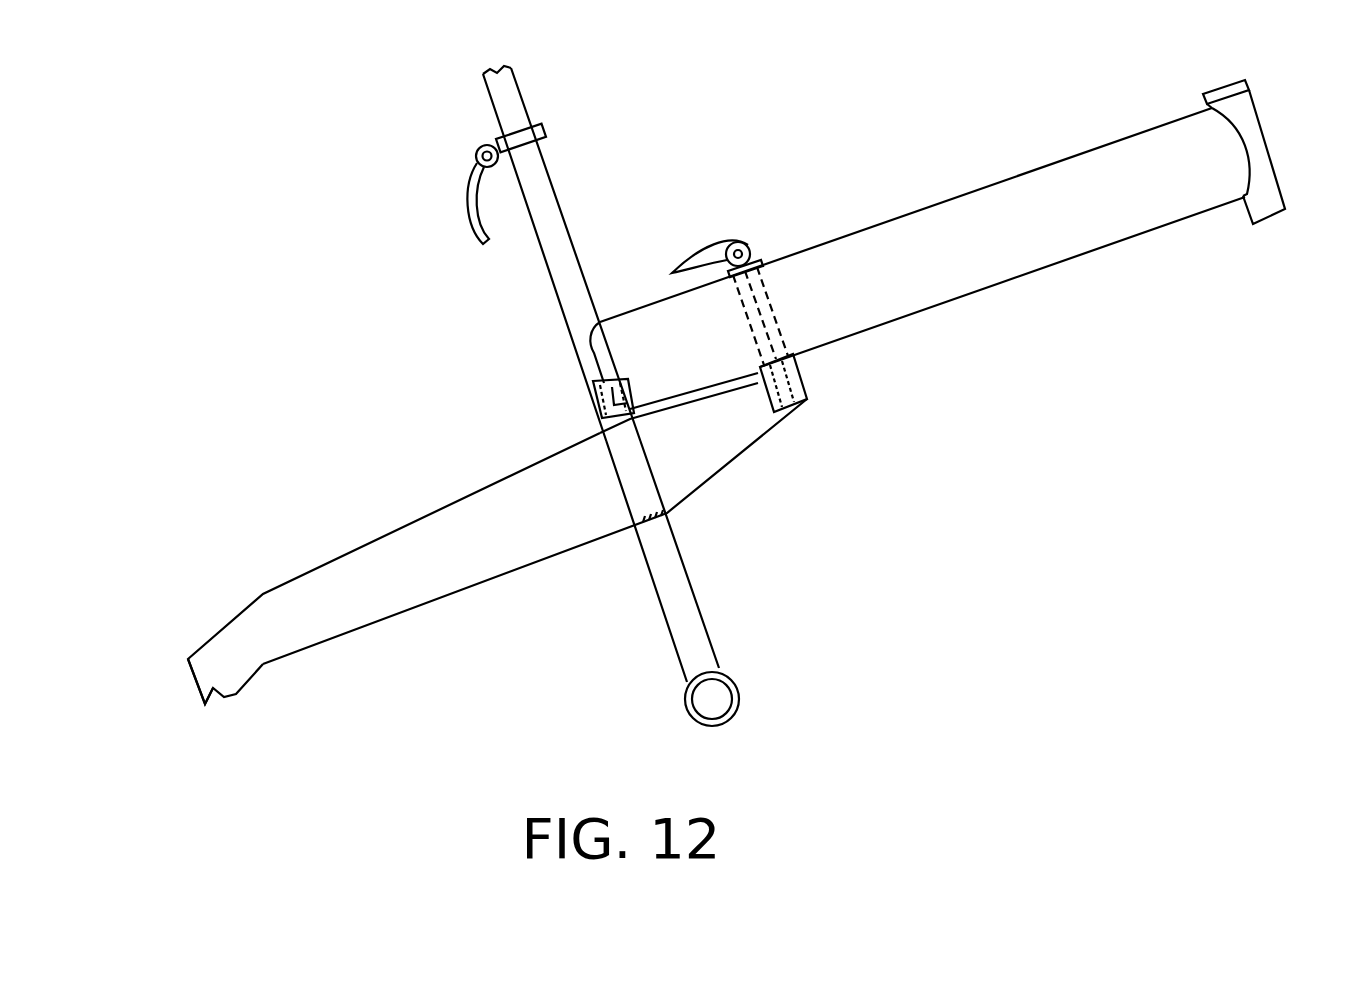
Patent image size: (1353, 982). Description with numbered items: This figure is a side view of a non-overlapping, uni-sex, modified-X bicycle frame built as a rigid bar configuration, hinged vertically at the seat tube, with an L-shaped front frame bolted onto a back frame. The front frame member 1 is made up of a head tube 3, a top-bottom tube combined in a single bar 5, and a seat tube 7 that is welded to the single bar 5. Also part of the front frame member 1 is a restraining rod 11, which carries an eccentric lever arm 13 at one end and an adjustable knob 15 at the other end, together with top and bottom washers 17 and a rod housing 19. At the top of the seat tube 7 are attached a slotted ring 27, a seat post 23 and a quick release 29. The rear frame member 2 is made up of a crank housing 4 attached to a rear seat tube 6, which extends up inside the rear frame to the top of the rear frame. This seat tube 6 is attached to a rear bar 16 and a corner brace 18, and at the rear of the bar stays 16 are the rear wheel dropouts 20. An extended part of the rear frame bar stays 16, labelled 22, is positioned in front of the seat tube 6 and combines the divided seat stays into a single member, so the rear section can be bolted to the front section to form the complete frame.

The front frame member 1 is at (922, 191).
The rear frame member 2 is at (314, 541).
The head tube 3 is at (1258, 130).
The crank housing 4 is at (683, 697).
The top-bottom tube combined in a single bar 5 is at (895, 269).
The seat tube 6 is at (677, 549).
The seat tube 7 is at (546, 309).
The restraining rod 11 is at (774, 292).
The eccentric lever arm 13 is at (741, 240).
The adjustable knob 15 is at (786, 414).
The rear bar 16 is at (511, 520).
The top and bottom washers 17 is at (750, 371).
The corner brace 18 is at (636, 574).
The rod housing 19 is at (800, 344).
The rear wheel dropouts 20 is at (212, 704).
The extended part of the rear frame bar stays 22 is at (636, 470).
The seat post 23 is at (514, 79).
The slotted ring 27 is at (534, 162).
The quick release 29 is at (467, 149).